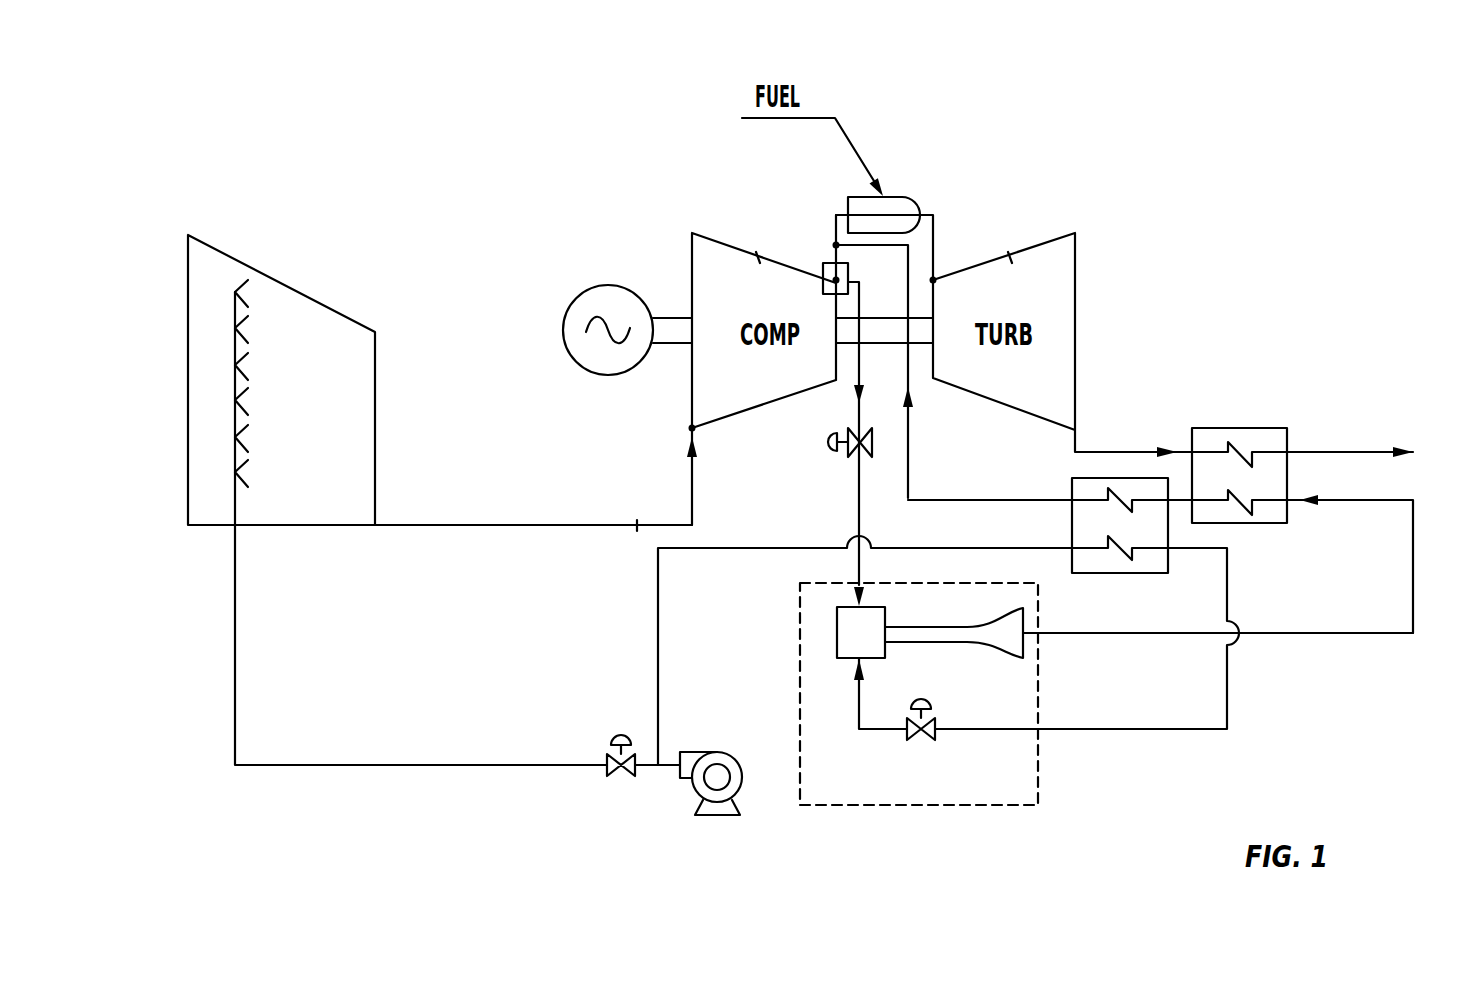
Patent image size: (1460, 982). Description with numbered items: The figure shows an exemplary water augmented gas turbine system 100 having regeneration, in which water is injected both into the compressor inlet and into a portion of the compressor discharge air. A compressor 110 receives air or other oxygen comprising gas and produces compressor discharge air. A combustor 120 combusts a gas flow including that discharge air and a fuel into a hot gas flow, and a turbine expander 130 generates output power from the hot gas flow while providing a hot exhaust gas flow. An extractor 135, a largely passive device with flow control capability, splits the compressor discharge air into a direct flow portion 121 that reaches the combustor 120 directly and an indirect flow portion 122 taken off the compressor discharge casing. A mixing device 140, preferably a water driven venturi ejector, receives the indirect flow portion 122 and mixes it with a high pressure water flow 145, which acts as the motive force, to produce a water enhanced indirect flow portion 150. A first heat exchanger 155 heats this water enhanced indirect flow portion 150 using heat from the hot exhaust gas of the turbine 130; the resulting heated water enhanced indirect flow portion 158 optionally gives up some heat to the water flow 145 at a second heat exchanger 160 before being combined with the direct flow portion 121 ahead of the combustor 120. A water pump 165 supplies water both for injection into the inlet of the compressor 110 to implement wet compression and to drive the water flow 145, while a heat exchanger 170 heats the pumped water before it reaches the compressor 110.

The water augmented gas turbine system 100 is at (1280, 276).
The compressor 110 is at (705, 250).
The combustor 120 is at (892, 197).
The direct flow portion 121 is at (835, 245).
The indirect flow portion 122 is at (855, 372).
The turbine expander 130 is at (1052, 283).
The extractor 135 is at (835, 280).
The mixing device 140 is at (938, 807).
The water flow 145 is at (693, 548).
The water enhanced indirect flow portion 150 is at (1080, 635).
The first heat exchanger 155 is at (1287, 428).
The heated water enhanced indirect flow portion 158 is at (1172, 500).
The second heat exchanger 160 is at (1072, 528).
The water pump 165 is at (683, 783).
The heat exchanger 170 is at (188, 452).